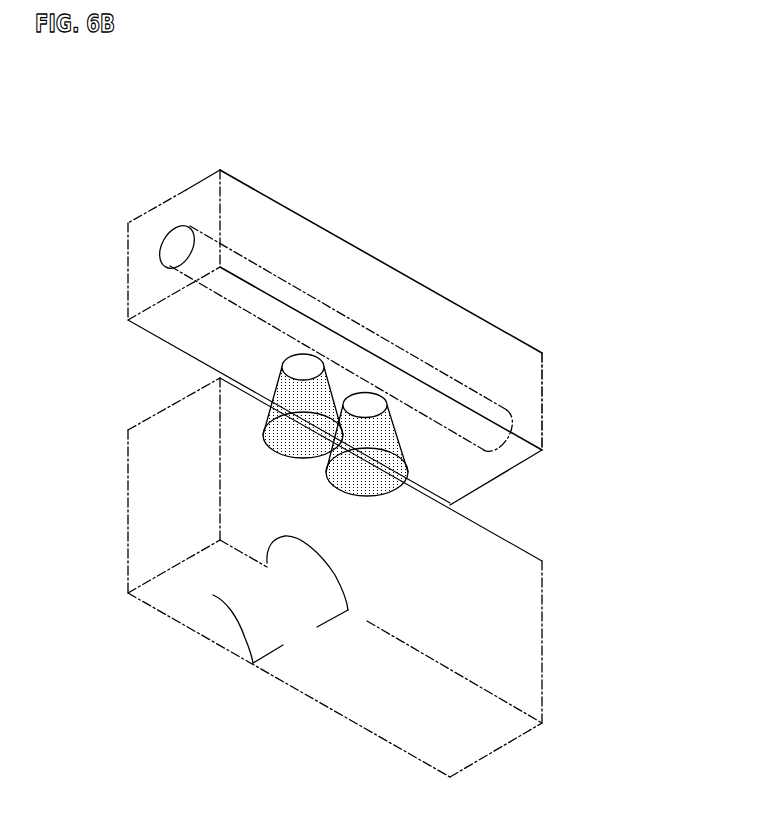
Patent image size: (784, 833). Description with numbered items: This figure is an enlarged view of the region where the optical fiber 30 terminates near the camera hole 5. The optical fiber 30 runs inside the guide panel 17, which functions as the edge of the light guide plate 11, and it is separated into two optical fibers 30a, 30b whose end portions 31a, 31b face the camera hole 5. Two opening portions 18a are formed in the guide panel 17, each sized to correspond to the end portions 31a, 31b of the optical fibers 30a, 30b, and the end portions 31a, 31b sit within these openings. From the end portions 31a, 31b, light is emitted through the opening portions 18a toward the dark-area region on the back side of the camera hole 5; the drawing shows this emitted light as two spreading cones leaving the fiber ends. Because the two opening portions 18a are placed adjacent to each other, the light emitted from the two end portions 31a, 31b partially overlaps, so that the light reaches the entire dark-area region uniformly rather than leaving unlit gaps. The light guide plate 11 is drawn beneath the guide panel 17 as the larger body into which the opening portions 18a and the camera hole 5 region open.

The optical fiber 30 is at (304, 176).
The separated optical fiber 30a is at (282, 285).
The guide panel 17 is at (363, 270).
The separated optical fiber 30b is at (424, 367).
The end portion 31a is at (280, 435).
The end portion 31b is at (410, 477).
The light guide plate 11 is at (527, 573).
The opening portion 18a is at (365, 500).
The camera hole 5 is at (343, 577).
The element light is at (280, 408).